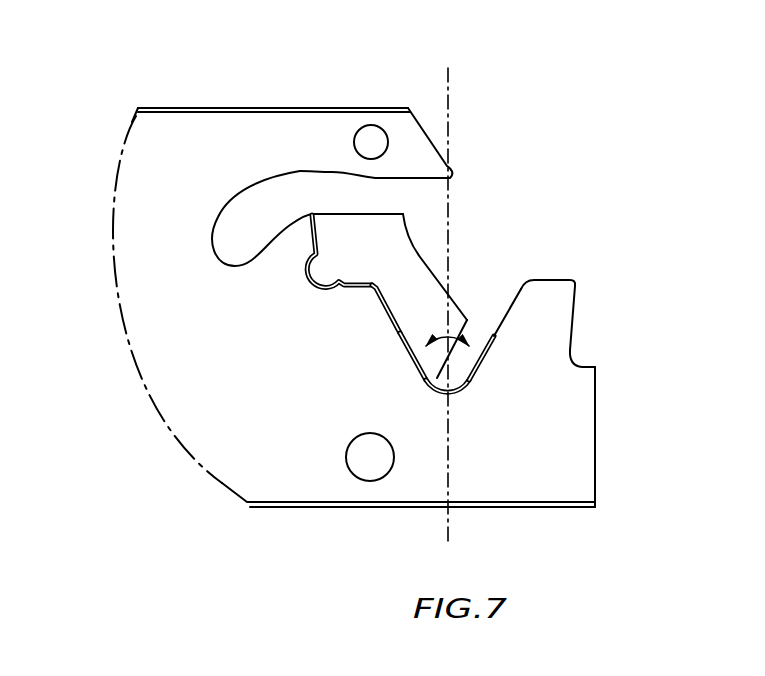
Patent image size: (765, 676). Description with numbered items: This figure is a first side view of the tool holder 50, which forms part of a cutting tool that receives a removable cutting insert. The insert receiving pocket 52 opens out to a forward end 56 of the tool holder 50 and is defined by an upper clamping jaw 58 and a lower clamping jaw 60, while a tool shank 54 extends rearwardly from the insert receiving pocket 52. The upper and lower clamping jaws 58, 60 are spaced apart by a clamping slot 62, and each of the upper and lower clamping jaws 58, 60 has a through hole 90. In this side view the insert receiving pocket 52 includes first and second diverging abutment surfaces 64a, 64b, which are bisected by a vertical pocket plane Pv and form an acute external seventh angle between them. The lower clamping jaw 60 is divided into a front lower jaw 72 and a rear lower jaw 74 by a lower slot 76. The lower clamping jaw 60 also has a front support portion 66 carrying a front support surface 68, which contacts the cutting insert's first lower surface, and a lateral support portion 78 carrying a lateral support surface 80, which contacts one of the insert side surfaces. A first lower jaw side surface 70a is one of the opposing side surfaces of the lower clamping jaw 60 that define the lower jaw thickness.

The tool holder 50 is at (390, 293).
The insert receiving pocket 52 is at (448, 309).
The tool shank 54 is at (160, 327).
The forward end 56 is at (598, 395).
The upper clamping jaw 58 is at (292, 137).
The lower clamping jaw 60 is at (486, 364).
The clamping slot 62 is at (277, 195).
The first abutment surface 64a is at (487, 345).
The second abutment surface 64b is at (415, 335).
The front support portion 66 is at (542, 308).
The front support surface 68 is at (611, 292).
The first lower jaw side surface 70a is at (492, 455).
The front lower jaw 72 is at (503, 381).
The rear lower jaw 74 is at (370, 347).
The lower slot 76 is at (482, 335).
The lateral support portion 78 is at (422, 256).
The lateral support surface 80 is at (463, 278).
The through hole 90 is at (370, 140).
The vertical pocket plane Pv is at (448, 291).